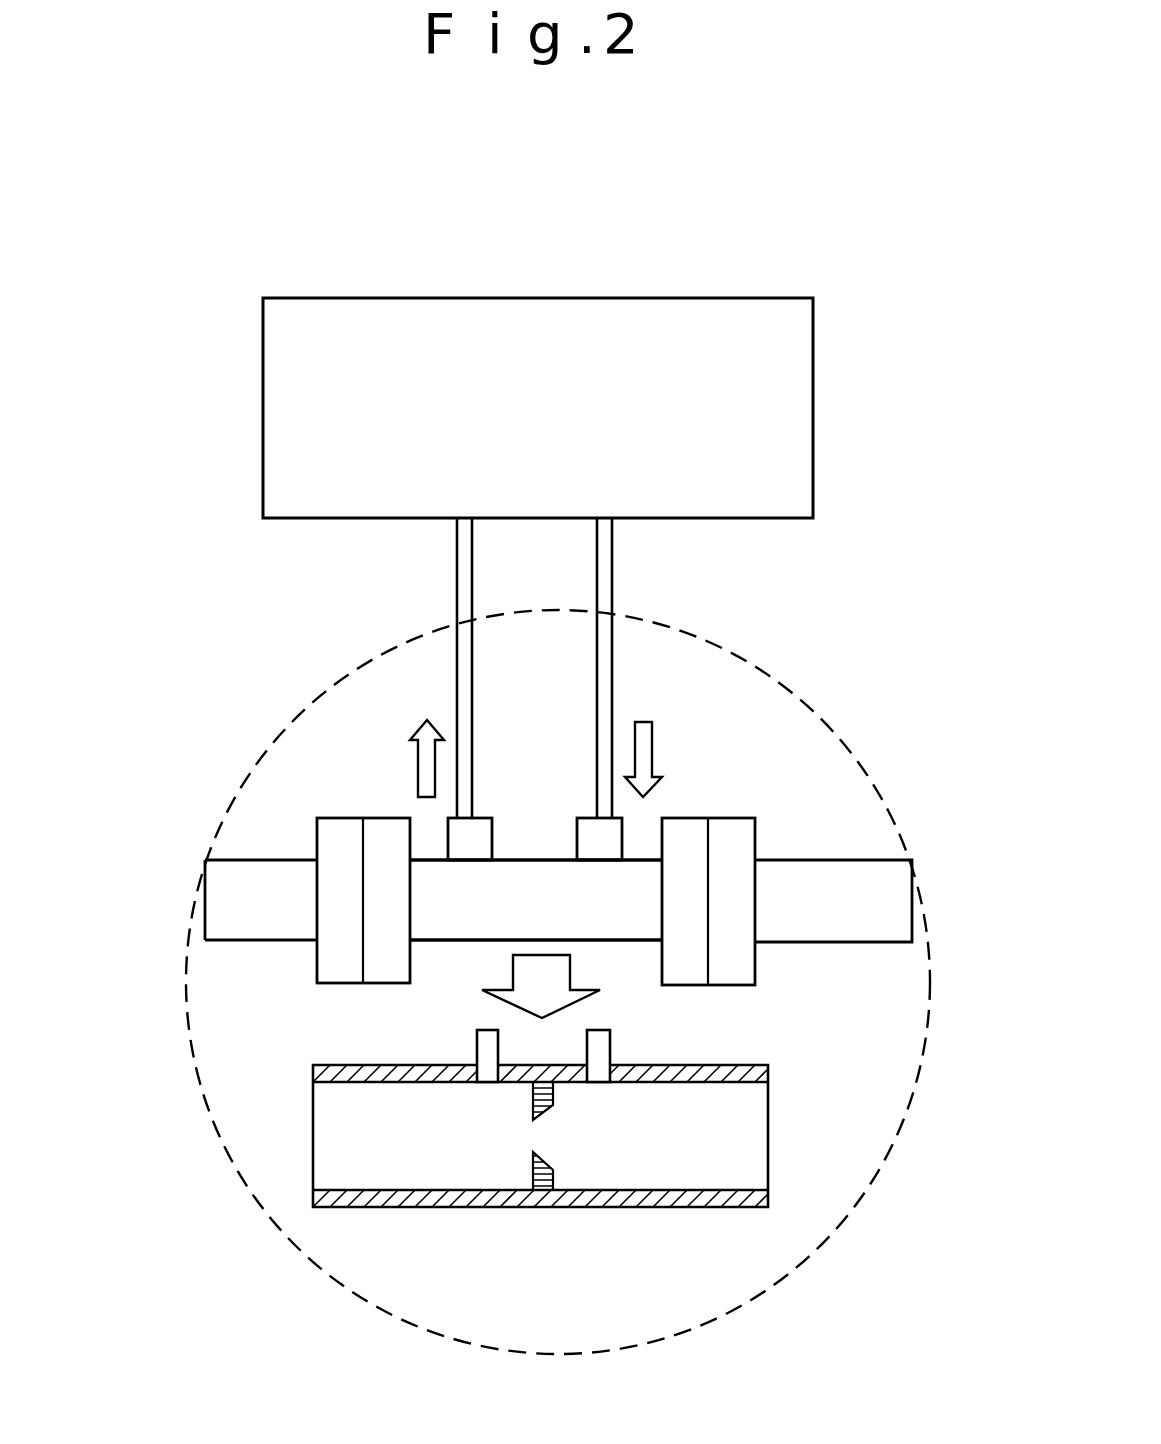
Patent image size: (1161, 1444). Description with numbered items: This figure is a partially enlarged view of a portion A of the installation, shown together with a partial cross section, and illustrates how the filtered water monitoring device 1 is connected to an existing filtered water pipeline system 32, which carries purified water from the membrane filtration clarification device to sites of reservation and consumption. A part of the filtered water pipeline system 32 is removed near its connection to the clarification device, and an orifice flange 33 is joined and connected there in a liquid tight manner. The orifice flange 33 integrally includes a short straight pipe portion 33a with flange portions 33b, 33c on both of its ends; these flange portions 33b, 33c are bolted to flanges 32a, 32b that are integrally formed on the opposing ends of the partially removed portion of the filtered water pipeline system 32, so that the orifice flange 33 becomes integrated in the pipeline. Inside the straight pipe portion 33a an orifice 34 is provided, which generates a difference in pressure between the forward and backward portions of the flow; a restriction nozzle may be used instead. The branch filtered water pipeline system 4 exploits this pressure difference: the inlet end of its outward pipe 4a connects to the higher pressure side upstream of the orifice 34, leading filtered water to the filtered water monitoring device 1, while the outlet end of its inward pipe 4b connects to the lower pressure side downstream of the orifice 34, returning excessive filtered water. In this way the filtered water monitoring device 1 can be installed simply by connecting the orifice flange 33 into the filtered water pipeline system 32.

The filtered water monitoring device 1 is at (520, 288).
The branch filtered water pipeline system 4 is at (474, 668).
The outward pipe 4a is at (473, 662).
The inward pipe 4b is at (597, 705).
The portion A is at (268, 747).
The filtered water pipeline system 32 is at (225, 897).
The flange 32a is at (317, 963).
The flange 32b is at (737, 833).
The orifice flange 33 is at (466, 958).
The straight pipe portion 33a is at (542, 860).
The flange portion 33b is at (382, 983).
The flange portion 33c is at (692, 987).
The orifice 34 is at (533, 1102).